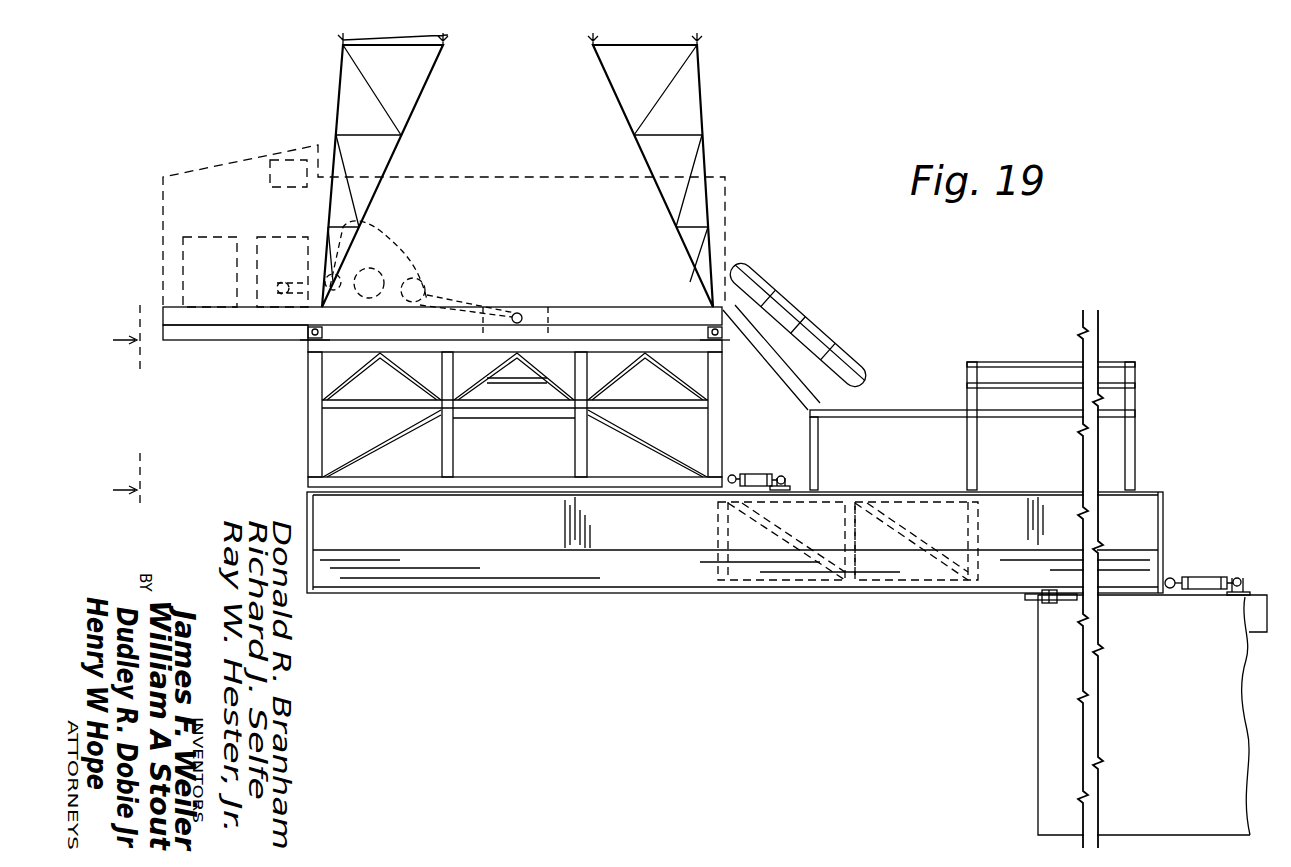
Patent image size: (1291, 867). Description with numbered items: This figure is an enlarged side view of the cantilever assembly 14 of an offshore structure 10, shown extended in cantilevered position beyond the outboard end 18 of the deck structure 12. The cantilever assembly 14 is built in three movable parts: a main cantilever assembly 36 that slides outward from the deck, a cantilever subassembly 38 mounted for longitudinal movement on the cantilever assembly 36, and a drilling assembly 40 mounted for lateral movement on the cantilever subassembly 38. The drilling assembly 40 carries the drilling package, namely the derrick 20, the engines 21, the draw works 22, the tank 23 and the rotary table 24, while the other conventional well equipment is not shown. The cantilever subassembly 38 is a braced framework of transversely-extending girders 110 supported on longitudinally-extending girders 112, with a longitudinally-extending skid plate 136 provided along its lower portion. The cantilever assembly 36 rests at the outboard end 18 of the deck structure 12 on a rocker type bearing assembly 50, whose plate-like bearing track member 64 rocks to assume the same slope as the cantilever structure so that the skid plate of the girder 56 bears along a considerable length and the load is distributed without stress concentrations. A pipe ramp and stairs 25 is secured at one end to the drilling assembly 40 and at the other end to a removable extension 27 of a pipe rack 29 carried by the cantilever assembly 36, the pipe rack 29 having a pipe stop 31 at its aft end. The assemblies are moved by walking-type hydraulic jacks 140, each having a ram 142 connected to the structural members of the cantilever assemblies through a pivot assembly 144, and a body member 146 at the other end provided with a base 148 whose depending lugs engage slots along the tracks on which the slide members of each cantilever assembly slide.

The offshore structure 10 is at (1116, 712).
The deck structure 12 is at (1185, 743).
The cantilever assembly 14 is at (735, 574).
The outboard end 18 is at (1038, 722).
The derrick 20 is at (338, 82).
The engines 21 is at (272, 237).
The draw works 22 is at (386, 233).
The tank 23 is at (273, 167).
The rotary table 24 is at (517, 313).
The pipe ramp and stairs 25 is at (806, 306).
The removable extension 27 is at (897, 410).
The pipe rack 29 is at (1002, 422).
The pipe stop 31 is at (1130, 362).
The cantilever assembly 36 is at (447, 578).
The cantilever subassembly 38 is at (505, 408).
The drilling assembly 40 is at (221, 321).
The rocker type bearing assembly 50 is at (1030, 615).
The girder 56 is at (498, 535).
The bearing track member 64 is at (538, 597).
The transversely-extending girders 110 is at (308, 368).
The outermost set of girders 112 is at (308, 422).
The skid plate 136 is at (308, 490).
The hydraulic jacks 140 is at (786, 469).
The rams 142 is at (748, 472).
The pivot assemblies 144 is at (1177, 572).
The body members 146 is at (1240, 591).
The bases 148 is at (1227, 597).